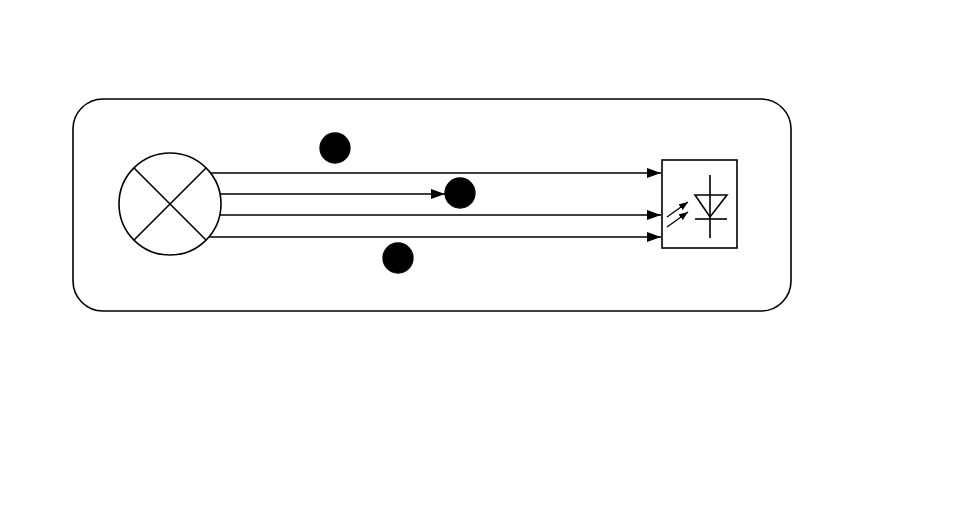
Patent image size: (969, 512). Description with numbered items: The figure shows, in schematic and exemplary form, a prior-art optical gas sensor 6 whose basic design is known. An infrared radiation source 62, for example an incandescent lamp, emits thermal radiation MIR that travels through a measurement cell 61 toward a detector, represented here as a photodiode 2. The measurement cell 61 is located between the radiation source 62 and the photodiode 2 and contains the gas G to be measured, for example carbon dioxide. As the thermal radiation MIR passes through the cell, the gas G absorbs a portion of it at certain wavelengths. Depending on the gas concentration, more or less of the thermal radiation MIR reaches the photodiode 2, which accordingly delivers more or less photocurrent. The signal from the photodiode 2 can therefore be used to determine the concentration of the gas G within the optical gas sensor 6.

The optical gas sensor 6 is at (773, 55).
The measurement cell 61 is at (519, 148).
The infrared radiation source 62 is at (169, 181).
The thermal radiation MIR is at (264, 178).
The gas G is at (397, 243).
The photodiode 2 is at (697, 182).